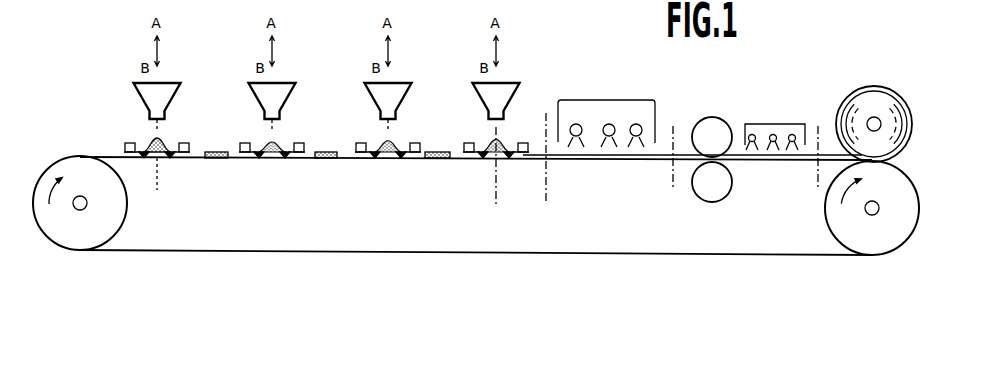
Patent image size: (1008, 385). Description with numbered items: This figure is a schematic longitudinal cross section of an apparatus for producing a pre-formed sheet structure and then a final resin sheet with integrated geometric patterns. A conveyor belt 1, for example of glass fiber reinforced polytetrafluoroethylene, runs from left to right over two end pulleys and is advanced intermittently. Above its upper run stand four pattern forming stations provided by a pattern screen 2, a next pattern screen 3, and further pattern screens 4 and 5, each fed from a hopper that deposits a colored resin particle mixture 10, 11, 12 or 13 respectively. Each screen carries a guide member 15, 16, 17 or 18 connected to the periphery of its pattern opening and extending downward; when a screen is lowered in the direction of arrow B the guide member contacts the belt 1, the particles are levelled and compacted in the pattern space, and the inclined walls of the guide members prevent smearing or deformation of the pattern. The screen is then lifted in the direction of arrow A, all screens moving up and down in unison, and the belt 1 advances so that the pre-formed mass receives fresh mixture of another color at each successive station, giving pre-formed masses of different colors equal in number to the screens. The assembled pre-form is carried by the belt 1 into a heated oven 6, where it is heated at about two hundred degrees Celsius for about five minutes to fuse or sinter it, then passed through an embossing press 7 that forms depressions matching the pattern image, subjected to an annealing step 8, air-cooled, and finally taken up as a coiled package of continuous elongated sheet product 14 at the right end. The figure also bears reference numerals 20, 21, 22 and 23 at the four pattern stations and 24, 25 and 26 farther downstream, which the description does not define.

The conveyor belt 1 is at (231, 255).
The pattern screen 2 is at (152, 160).
The pattern screen 3 is at (292, 157).
The pattern screen 4 is at (411, 152).
The pattern screen 5 is at (494, 158).
The heated oven 6 is at (638, 98).
The embossing press 7 is at (717, 116).
The annealing step 8 is at (784, 106).
The colored resin particle mixture 10 is at (149, 140).
The resin particle mixture 11 is at (268, 141).
The resin particle mixture 12 is at (377, 141).
The resin particle mixture 13 is at (489, 141).
The coiled package of continuous elongated sheet product 14 is at (877, 86).
The guide member 15 is at (177, 160).
The guide member 16 is at (258, 160).
The guide member 17 is at (371, 160).
The guide member 18 is at (470, 160).
The first powder layer 20 is at (162, 169).
The second powder layer 21 is at (276, 169).
The third powder layer 22 is at (391, 169).
The fourth powder layer 23 is at (500, 135).
The position line at take-up roller 24 is at (815, 170).
The position line after filling 25 is at (545, 120).
The position line at heating station 26 is at (673, 171).